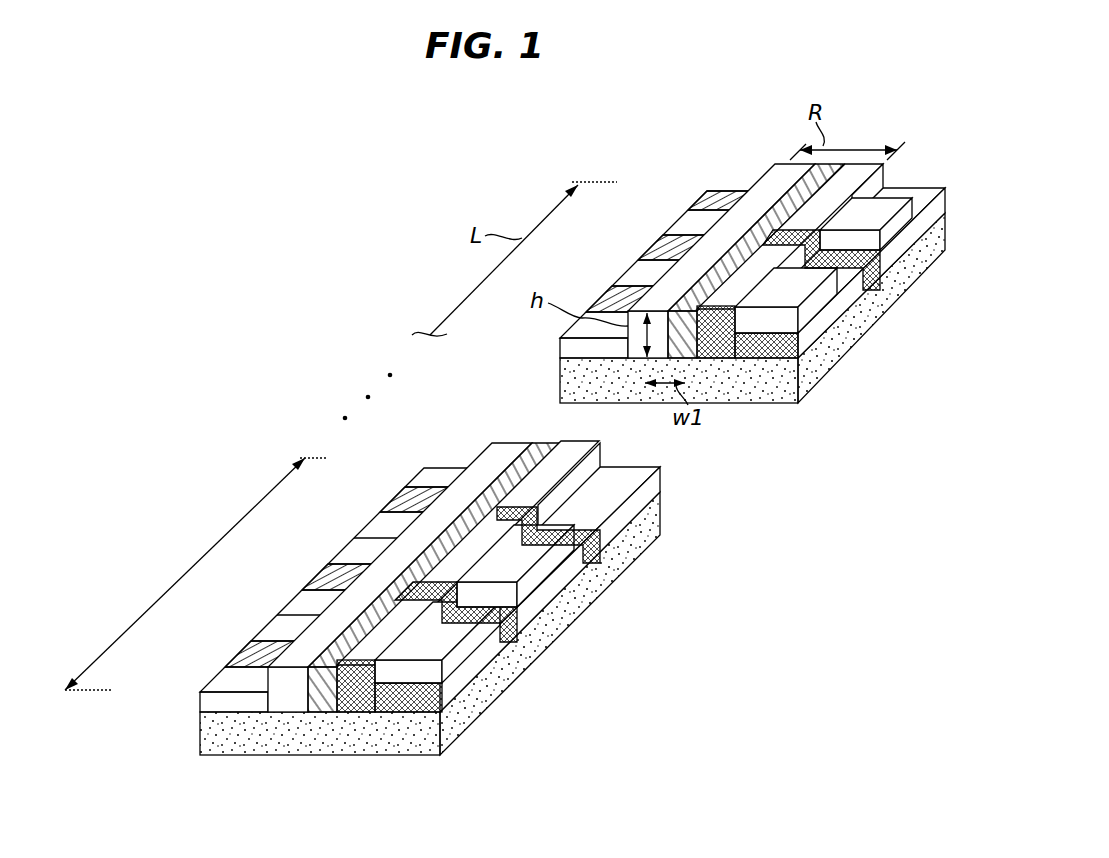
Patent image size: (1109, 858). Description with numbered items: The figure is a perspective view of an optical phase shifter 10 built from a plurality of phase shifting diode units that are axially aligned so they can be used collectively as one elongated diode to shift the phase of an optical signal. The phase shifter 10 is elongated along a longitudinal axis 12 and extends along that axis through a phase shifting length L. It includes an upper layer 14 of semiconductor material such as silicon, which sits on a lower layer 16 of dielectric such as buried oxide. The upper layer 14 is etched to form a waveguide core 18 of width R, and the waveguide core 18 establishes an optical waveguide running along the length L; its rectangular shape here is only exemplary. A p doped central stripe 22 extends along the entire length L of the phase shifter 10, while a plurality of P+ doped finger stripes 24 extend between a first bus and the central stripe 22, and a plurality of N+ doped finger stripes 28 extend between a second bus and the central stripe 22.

The optical phase shifter 10 is at (326, 351).
The longitudinal axis 12 is at (305, 736).
The upper layer 14 is at (625, 478).
The lower layer 16 is at (665, 519).
The waveguide core 18 is at (493, 447).
The p doped central stripe 22 is at (540, 452).
The P+ doped finger stripes 24 is at (415, 497).
The N+ doped finger stripes 28 is at (610, 554).